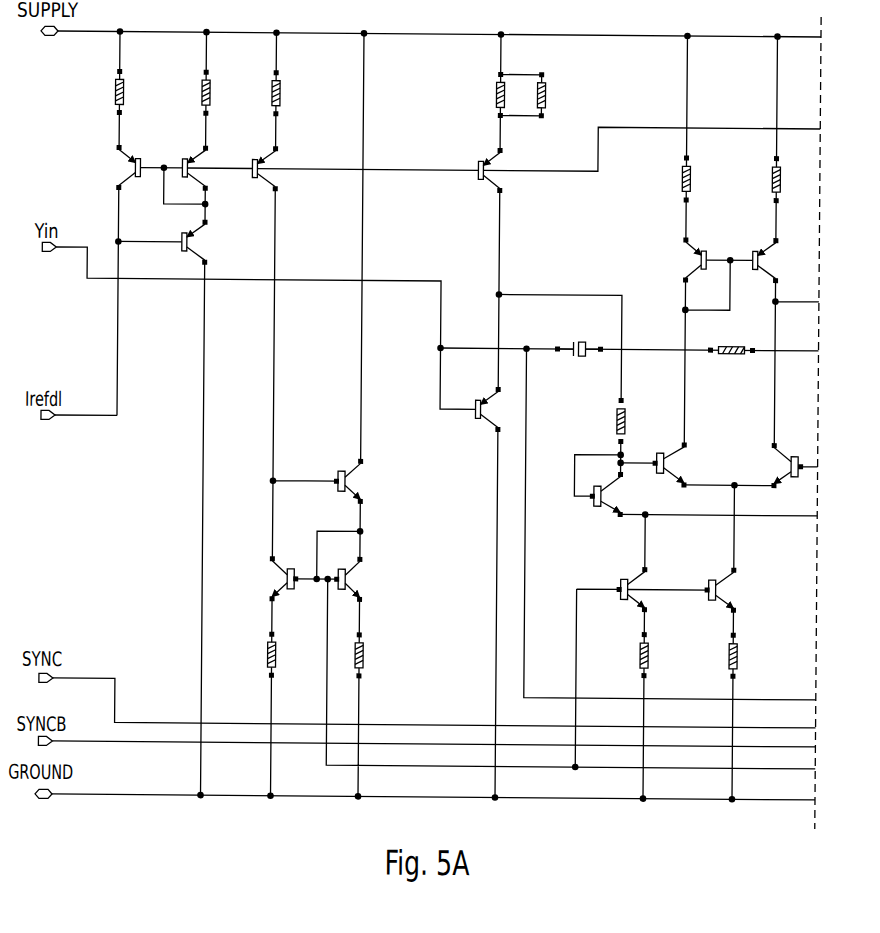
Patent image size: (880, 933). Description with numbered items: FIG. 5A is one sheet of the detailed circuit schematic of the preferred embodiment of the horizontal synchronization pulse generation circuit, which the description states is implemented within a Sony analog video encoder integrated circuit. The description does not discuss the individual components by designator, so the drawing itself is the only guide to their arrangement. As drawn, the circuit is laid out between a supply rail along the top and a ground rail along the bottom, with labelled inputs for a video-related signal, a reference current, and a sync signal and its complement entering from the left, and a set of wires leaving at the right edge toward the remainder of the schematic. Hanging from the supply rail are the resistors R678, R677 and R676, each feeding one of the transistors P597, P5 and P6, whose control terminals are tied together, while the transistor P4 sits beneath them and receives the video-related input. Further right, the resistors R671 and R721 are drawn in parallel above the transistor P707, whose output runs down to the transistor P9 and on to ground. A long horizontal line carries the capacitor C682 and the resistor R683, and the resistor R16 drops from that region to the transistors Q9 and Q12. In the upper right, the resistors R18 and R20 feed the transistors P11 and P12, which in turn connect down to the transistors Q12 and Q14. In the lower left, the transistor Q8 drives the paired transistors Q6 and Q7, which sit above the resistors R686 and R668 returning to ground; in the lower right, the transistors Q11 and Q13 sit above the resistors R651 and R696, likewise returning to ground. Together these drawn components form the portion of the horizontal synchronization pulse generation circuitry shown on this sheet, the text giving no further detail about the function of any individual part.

The resistor R678 is at (96, 92).
The resistor R677 is at (184, 92).
The resistor R676 is at (253, 93).
The resistor R671 is at (477, 95).
The resistor R721 is at (567, 95).
The resistor R18 is at (669, 178).
The resistor R20 is at (759, 179).
The resistor R16 is at (603, 421).
The resistor R686 is at (248, 654).
The resistor R668 is at (381, 655).
The resistor R651 is at (620, 655).
The resistor R696 is at (709, 655).
The resistor R683 is at (731, 365).
The capacitor C682 is at (579, 337).
The PNP transistor P597 is at (141, 159).
The PNP transistor P5 is at (194, 160).
The PNP transistor P6 is at (262, 160).
The PNP transistor P707 is at (478, 163).
The PNP transistor P4 is at (192, 236).
The PNP transistor P9 is at (486, 404).
The PNP transistor P11 is at (702, 254).
The PNP transistor P12 is at (757, 254).
The NPN transistor Q8 is at (347, 476).
The NPN transistor Q6 is at (285, 573).
The NPN transistor Q7 is at (347, 573).
The NPN transistor Q9 is at (606, 488).
The NPN transistor Q12 is at (664, 458).
The NPN transistor Q14 is at (790, 460).
The NPN transistor Q11 is at (625, 583).
The NPN transistor Q13 is at (715, 584).